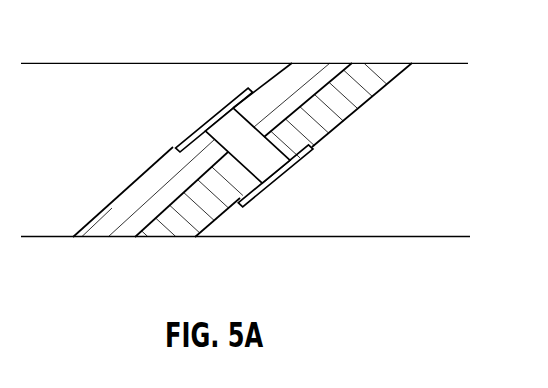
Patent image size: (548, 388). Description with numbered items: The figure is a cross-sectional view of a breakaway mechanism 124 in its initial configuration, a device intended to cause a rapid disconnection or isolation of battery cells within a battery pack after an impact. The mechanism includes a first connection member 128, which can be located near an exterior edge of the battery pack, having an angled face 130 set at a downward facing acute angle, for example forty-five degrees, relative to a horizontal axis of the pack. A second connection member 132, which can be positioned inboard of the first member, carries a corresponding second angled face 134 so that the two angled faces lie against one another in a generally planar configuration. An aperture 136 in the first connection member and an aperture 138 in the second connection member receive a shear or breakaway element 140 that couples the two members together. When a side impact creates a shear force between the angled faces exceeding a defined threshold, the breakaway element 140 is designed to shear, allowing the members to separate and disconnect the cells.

The breakaway mechanism 124 is at (150, 34).
The first connection member 128 is at (121, 213).
The angled face 130 is at (163, 233).
The second connection member 132 is at (332, 106).
The second angled face 134 is at (305, 78).
The aperture 136 is at (207, 148).
The aperture 138 is at (247, 205).
The breakaway element 140 is at (230, 126).